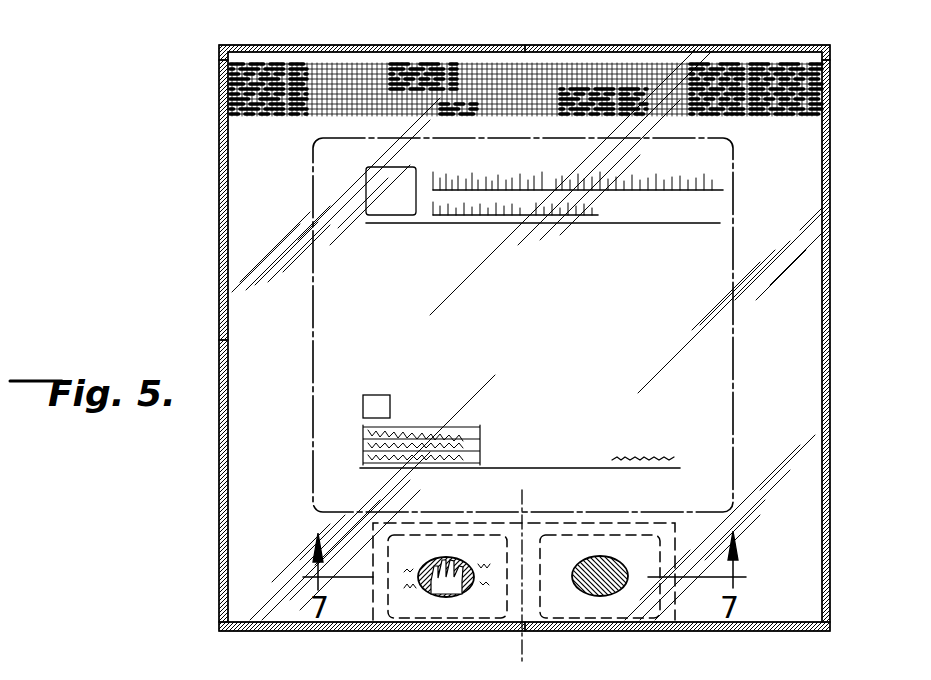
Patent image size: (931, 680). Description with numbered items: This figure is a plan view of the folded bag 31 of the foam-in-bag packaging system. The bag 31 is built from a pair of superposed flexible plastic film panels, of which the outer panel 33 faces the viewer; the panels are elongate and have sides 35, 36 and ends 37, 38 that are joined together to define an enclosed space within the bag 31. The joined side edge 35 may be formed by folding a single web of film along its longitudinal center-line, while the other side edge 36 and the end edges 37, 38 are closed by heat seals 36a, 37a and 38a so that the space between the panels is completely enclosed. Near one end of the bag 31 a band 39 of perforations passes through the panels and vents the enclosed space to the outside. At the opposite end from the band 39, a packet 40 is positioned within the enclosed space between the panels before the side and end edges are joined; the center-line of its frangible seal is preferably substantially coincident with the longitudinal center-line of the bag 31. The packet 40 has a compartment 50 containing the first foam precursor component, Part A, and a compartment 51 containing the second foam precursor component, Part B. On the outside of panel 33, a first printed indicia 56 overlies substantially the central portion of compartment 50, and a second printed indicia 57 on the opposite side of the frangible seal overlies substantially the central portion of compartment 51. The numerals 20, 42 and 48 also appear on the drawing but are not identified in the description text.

The displayed value indicia 20 is at (643, 445).
The folded bag 31 is at (238, 192).
The panel 33 is at (582, 310).
The side edge 35 is at (827, 338).
The side edge 36 is at (219, 290).
The heat seal 36a is at (218, 503).
The end edge 37 is at (360, 632).
The heat seal 37a is at (773, 628).
The end edge 38 is at (318, 45).
The heat seal 38a is at (538, 45).
The band of perforations 39 is at (232, 86).
The packet 40 is at (544, 512).
The lower member 42 is at (446, 677).
The lower member 48 is at (581, 677).
The compartment 50 is at (452, 622).
The compartment 51 is at (618, 622).
The first printed indicia 56 is at (453, 542).
The second printed indicia 57 is at (598, 546).